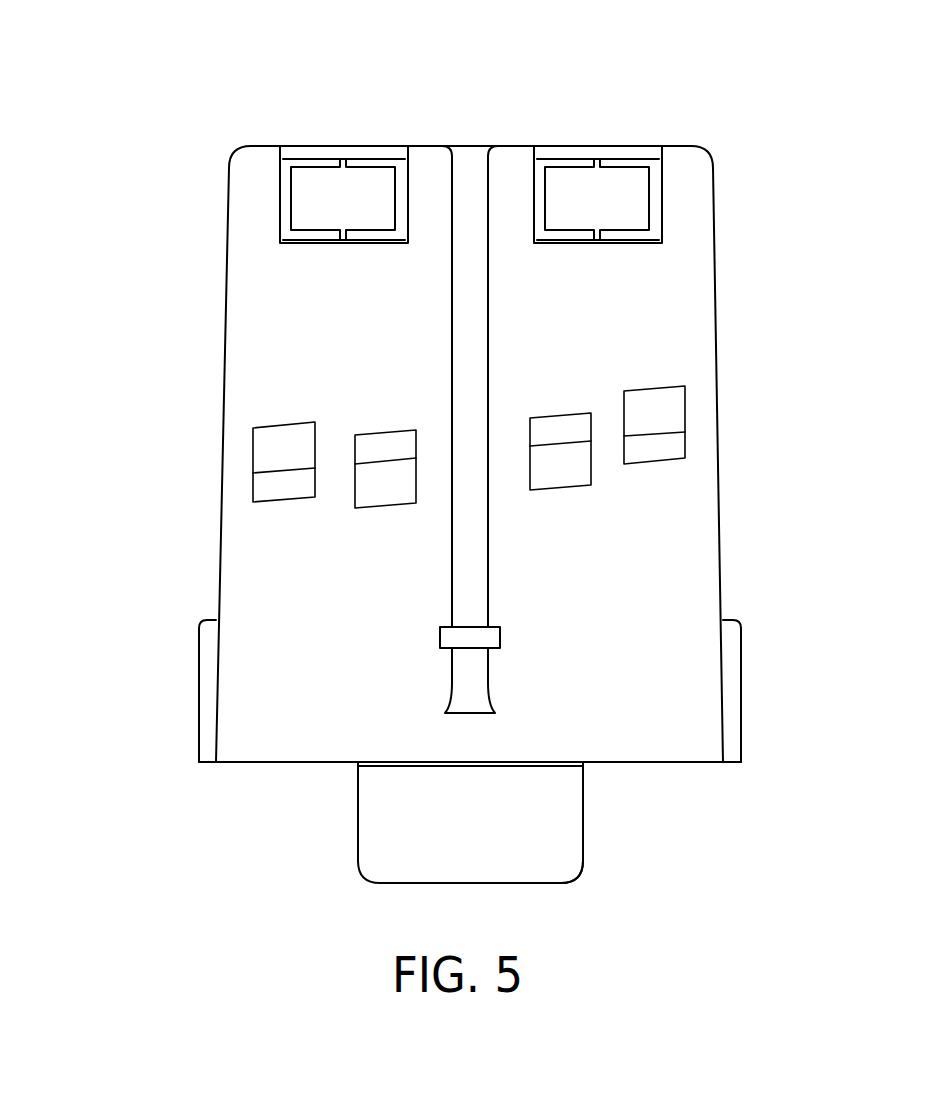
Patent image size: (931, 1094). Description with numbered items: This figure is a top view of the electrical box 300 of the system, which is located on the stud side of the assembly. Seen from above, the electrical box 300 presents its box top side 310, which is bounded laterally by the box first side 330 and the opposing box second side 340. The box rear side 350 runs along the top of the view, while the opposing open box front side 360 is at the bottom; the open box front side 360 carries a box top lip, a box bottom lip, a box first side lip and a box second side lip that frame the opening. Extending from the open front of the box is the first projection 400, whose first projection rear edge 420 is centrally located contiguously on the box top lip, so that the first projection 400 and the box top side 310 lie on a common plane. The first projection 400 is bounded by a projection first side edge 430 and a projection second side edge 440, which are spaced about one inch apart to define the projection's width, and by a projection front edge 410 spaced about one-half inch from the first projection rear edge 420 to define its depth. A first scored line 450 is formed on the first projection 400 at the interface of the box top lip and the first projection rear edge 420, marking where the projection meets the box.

The electrical box 300 is at (180, 117).
The box top side 310 is at (647, 290).
The box first side 330 is at (226, 288).
The box second side 340 is at (719, 527).
The box rear side 350 is at (545, 145).
The open box front side 360 is at (225, 763).
The first projection 400 is at (560, 820).
The projection front edge 410 is at (537, 883).
The first projection rear edge 420 is at (392, 766).
The projection first side edge 430 is at (358, 822).
The projection second side edge 440 is at (583, 848).
The first scored line 450 is at (437, 762).